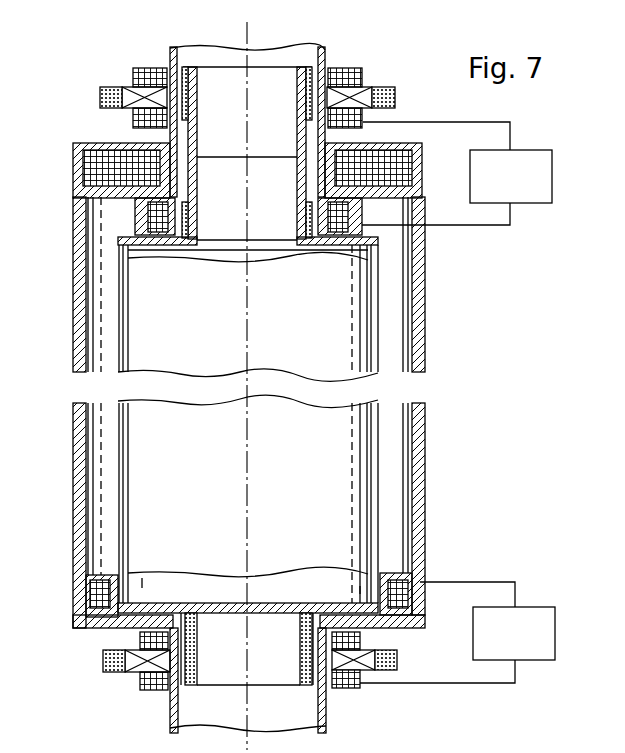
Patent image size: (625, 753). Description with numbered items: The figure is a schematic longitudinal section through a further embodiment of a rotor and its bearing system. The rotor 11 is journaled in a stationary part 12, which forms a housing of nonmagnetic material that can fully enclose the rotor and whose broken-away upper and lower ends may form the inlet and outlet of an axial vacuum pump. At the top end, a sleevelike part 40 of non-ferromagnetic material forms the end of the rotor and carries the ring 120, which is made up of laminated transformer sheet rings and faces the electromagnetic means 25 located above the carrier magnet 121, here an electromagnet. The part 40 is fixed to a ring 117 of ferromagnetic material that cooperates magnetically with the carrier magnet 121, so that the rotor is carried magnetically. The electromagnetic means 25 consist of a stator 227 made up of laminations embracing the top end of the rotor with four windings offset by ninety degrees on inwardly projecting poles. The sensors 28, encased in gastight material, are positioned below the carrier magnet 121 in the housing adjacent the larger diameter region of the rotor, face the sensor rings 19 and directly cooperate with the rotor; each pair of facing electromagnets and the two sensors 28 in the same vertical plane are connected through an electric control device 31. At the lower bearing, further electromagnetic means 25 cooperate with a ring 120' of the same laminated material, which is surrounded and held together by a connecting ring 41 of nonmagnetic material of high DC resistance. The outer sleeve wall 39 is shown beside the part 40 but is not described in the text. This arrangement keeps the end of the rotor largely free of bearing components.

The rotor 11 is at (150, 425).
The stationary part 12 is at (84, 505).
The sensor rings 19 is at (173, 246).
The electromagnetic means 25 is at (360, 58).
The sensors 28 is at (135, 213).
The electric control device 31 is at (527, 162).
The outer sleeve wall 39 is at (172, 48).
The sleevelike part 40 is at (247, 108).
The connecting ring 41 is at (173, 690).
The ring of ferromagnetic material 117 is at (300, 182).
The ring 120 is at (274, 129).
The ring 120' is at (247, 667).
The carrier magnet 121 is at (394, 158).
The stator 227 is at (101, 89).